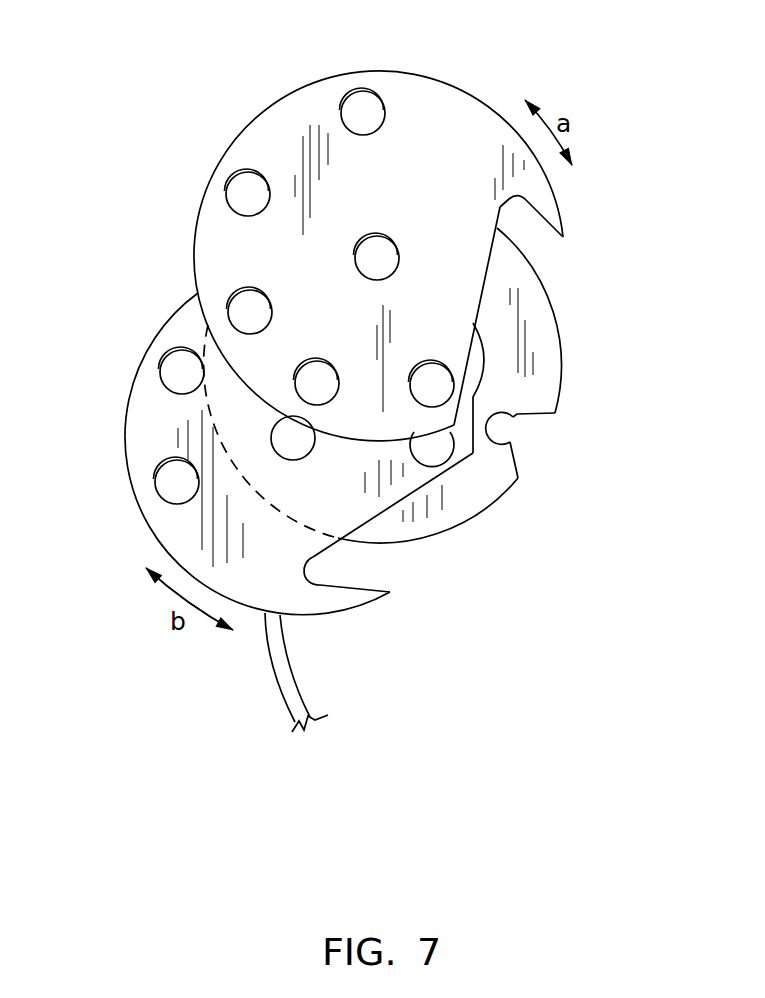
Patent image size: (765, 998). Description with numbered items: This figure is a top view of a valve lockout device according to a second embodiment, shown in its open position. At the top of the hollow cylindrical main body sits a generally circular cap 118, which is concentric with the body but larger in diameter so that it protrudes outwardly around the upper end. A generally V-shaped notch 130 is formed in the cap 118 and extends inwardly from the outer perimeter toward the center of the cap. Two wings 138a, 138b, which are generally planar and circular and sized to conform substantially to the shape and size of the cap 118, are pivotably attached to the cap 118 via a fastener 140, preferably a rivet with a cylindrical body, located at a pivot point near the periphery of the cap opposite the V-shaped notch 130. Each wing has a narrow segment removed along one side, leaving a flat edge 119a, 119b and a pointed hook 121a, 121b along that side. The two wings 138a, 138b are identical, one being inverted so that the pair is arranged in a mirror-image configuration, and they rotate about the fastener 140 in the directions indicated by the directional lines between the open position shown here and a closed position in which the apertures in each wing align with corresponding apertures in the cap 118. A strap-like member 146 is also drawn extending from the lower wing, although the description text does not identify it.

The wing 138a is at (462, 108).
The wing 138b is at (173, 523).
The pointed hook 121a is at (547, 202).
The pointed hook 121b is at (355, 598).
The flat edge 119a is at (482, 280).
The flat edge 119b is at (390, 510).
The fastener 140 is at (250, 300).
The cap 118 is at (545, 385).
The V-shaped notch 130 is at (520, 433).
The strap 146 is at (287, 678).